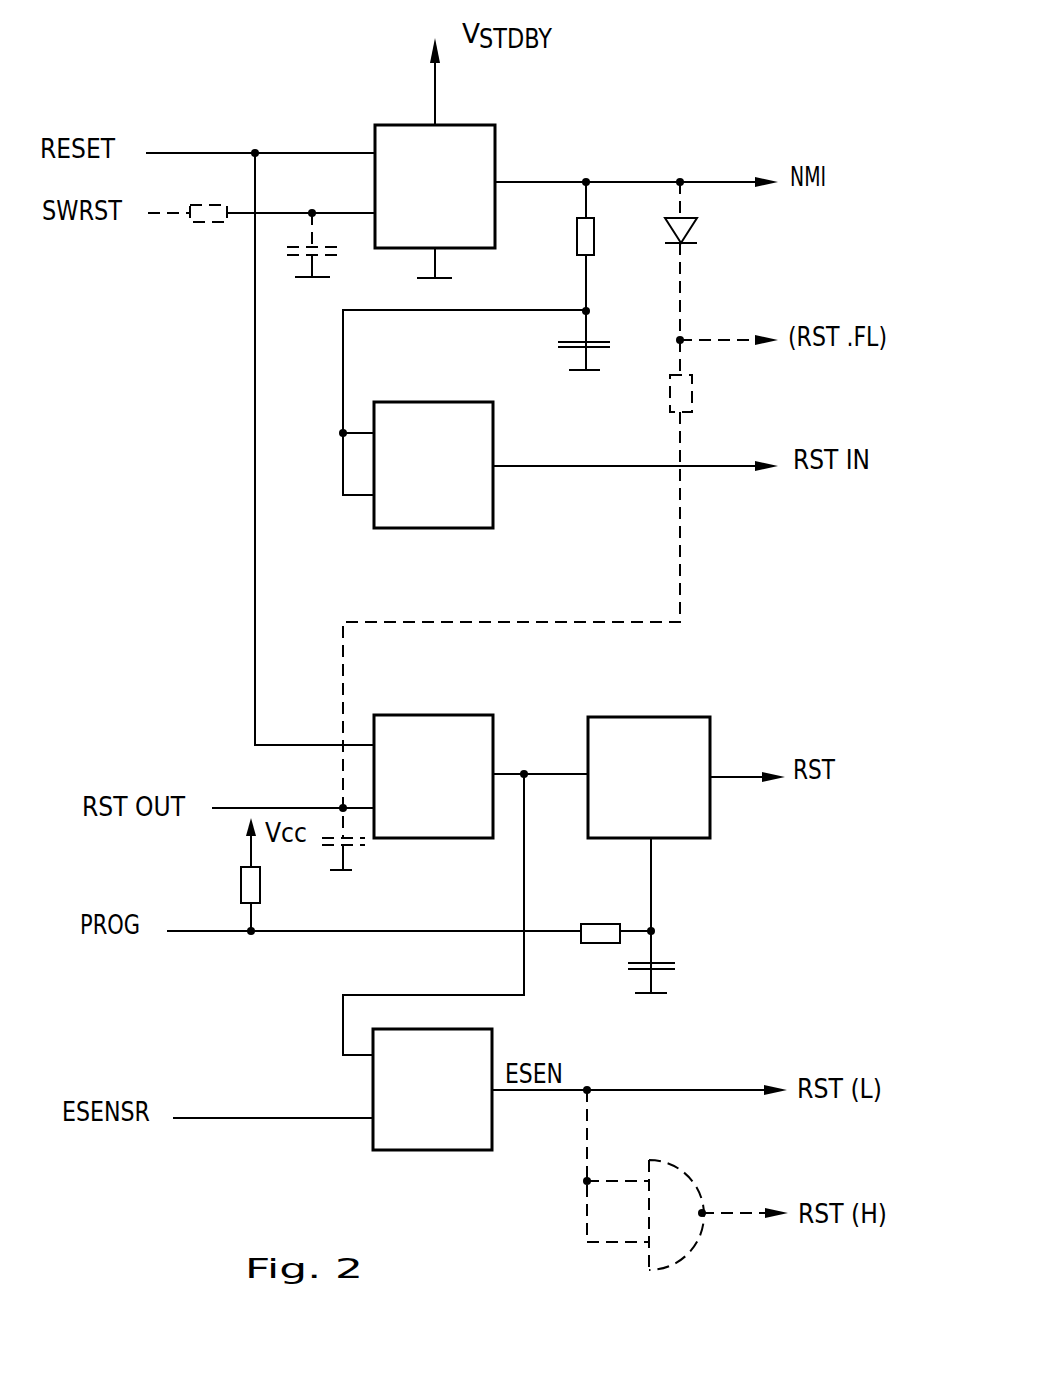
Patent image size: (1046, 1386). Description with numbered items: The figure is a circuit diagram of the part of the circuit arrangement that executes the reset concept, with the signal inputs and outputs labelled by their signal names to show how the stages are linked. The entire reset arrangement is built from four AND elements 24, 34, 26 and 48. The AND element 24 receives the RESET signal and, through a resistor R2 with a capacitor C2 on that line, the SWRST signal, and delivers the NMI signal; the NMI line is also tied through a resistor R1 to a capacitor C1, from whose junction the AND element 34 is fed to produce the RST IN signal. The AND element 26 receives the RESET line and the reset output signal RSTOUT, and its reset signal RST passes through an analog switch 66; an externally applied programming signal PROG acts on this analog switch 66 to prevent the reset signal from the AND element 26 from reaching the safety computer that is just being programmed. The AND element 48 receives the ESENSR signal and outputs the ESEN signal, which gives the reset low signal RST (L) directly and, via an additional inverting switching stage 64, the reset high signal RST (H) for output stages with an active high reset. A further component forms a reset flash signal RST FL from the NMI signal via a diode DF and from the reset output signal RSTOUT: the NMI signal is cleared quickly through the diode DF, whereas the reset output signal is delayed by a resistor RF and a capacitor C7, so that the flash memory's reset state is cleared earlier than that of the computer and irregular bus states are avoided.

The AND element 24 is at (452, 222).
The AND element 26 is at (448, 813).
The AND element 34 is at (447, 497).
The AND element 48 is at (447, 1122).
The inverting switching stage 64 is at (678, 1238).
The analog switch 66 is at (670, 800).
The resistor R1 is at (565, 246).
The resistor R2 is at (208, 196).
The capacitor C1 is at (573, 344).
The capacitor C2 is at (313, 265).
The capacitor C7 is at (357, 860).
The diode DF is at (699, 217).
The resistor RF is at (700, 379).